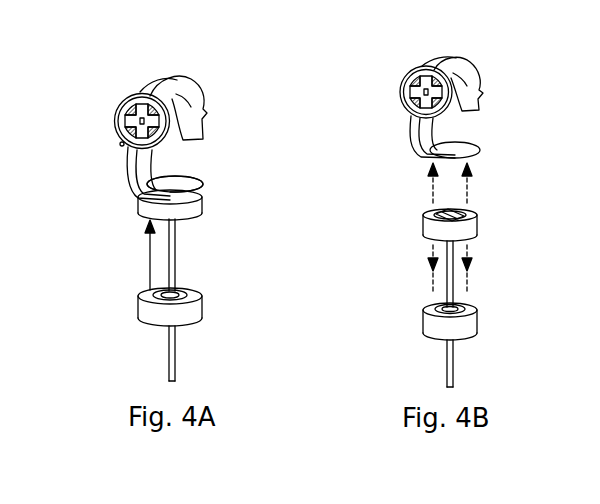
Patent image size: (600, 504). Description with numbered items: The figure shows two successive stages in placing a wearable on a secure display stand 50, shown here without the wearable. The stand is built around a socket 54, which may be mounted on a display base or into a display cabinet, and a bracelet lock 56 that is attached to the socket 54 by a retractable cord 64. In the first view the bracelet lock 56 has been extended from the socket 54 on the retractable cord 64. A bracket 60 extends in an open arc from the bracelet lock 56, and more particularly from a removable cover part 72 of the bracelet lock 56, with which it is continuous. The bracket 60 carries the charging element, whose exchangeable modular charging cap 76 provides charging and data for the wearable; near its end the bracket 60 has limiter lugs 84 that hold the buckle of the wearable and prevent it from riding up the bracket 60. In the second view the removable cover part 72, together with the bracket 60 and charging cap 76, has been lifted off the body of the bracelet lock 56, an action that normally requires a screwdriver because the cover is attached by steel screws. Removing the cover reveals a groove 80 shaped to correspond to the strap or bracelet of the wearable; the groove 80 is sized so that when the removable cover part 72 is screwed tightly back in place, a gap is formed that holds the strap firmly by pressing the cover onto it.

In FIG. 4A, the secure display stand 50 is at (110, 103).
In FIG. 4B, the secure display stand 50 is at (490, 129).
In FIG. 4A, the socket 54 is at (190, 307).
In FIG. 4B, the socket 54 is at (430, 327).
In FIG. 4A, the bracelet lock 56 is at (190, 203).
In FIG. 4B, the bracelet lock 56 is at (430, 228).
In FIG. 4A, the bracket 60 is at (183, 95).
In FIG. 4B, the bracket 60 is at (423, 65).
In FIG. 4A, the retractable cord 64 is at (177, 260).
In FIG. 4B, the retractable cord 64 is at (447, 292).
In FIG. 4A, the removable cover part 72 is at (183, 182).
In FIG. 4B, the removable cover part 72 is at (420, 155).
In FIG. 4A, the modular charging cap 76 is at (117, 132).
In FIG. 4B, the modular charging cap 76 is at (403, 97).
In FIG. 4B, the groove 80 is at (458, 213).
In FIG. 4B, the limiter lugs 84 is at (477, 90).